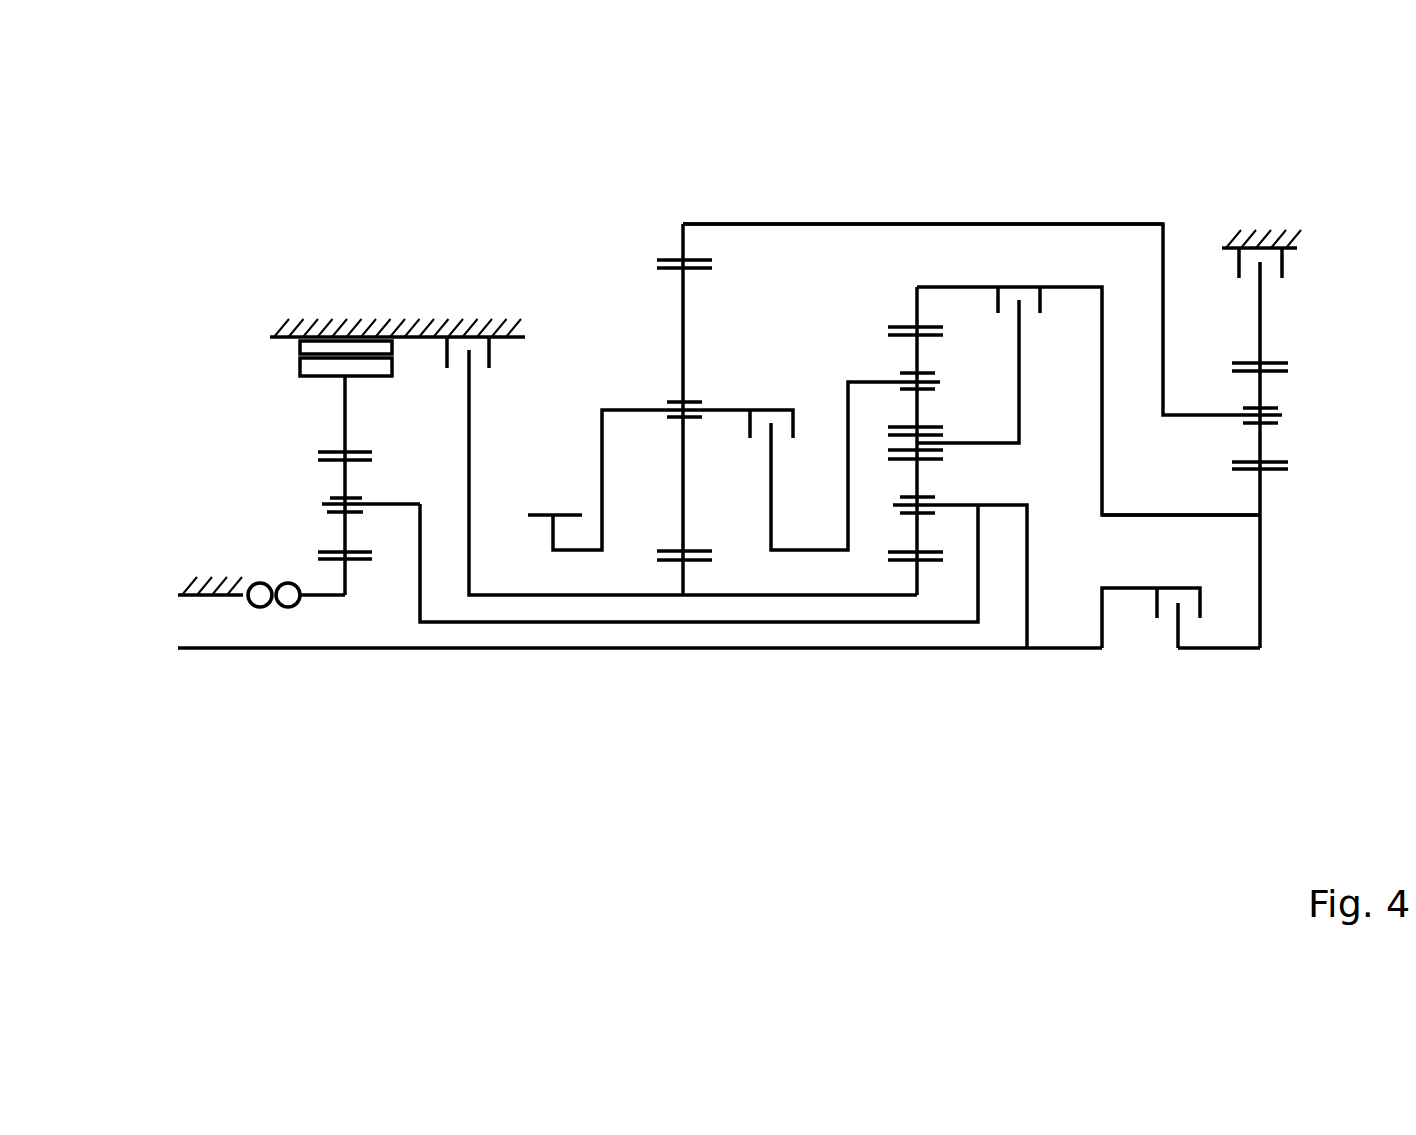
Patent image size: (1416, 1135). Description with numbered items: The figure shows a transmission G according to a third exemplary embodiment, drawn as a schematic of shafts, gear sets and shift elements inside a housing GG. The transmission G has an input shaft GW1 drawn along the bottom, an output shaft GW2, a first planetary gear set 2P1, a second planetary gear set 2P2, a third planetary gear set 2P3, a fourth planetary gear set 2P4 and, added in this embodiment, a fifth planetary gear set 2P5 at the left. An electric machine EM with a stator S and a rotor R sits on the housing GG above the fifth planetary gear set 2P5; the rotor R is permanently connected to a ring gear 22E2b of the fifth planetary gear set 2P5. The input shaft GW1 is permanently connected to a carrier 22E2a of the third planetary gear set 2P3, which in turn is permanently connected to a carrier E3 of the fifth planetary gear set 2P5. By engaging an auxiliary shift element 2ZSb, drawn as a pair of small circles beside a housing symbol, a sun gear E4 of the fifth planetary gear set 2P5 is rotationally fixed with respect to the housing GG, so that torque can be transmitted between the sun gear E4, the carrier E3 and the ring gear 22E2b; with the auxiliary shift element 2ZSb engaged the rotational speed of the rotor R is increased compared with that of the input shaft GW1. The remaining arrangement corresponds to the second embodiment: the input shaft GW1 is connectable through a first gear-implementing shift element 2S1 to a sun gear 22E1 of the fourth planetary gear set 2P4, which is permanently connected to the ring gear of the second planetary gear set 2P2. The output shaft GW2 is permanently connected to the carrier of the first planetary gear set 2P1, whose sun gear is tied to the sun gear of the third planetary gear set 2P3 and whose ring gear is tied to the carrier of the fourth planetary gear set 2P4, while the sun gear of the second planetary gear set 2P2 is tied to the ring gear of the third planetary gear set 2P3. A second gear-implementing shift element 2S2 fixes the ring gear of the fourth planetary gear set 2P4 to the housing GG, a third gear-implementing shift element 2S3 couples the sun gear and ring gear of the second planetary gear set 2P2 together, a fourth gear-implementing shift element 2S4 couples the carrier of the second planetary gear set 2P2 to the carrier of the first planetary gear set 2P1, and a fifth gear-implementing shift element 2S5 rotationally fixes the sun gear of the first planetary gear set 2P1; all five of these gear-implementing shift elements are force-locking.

The transmission G is at (268, 198).
The housing GG is at (207, 587).
The stator of electric machine S is at (298, 347).
The electric machine EM is at (245, 357).
The rotor R is at (298, 366).
The ring gear of the fifth planetary gear set 22E2b is at (327, 449).
The carrier of the fifth planetary gear set E3 is at (327, 500).
The fifth planetary gear set 2P5 is at (345, 655).
The auxiliary shift element 2ZSb is at (273, 612).
The input shaft GW1 is at (227, 655).
The sun gear of the fifth planetary gear set E4 is at (365, 563).
The output shaft GW2 is at (572, 552).
The fifth gear-implementing shift element 2S5 is at (497, 353).
The fourth gear-implementing shift element 2S4 is at (767, 400).
The second planetary gear set 2P2 is at (917, 285).
The third gear-implementing shift element 2S3 is at (1028, 284).
The second gear-implementing shift element 2S2 is at (1295, 263).
The first planetary gear set 2P1 is at (683, 655).
The third planetary gear set 2P3 is at (917, 655).
The carrier of the third planetary gear set 22E2a is at (950, 512).
The first gear-implementing shift element 2S1 is at (1193, 624).
The fourth planetary gear set 2P4 is at (1260, 655).
The sun gear of the fourth planetary gear set 22E1 is at (1273, 472).